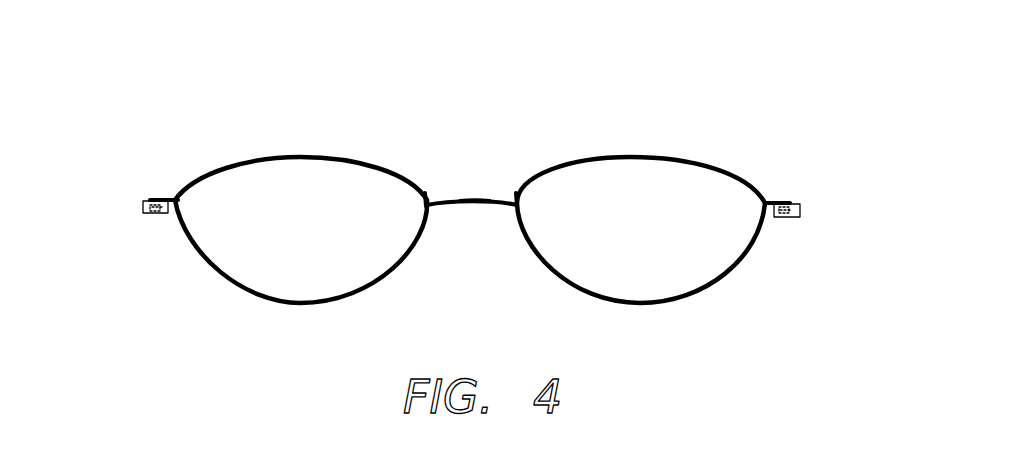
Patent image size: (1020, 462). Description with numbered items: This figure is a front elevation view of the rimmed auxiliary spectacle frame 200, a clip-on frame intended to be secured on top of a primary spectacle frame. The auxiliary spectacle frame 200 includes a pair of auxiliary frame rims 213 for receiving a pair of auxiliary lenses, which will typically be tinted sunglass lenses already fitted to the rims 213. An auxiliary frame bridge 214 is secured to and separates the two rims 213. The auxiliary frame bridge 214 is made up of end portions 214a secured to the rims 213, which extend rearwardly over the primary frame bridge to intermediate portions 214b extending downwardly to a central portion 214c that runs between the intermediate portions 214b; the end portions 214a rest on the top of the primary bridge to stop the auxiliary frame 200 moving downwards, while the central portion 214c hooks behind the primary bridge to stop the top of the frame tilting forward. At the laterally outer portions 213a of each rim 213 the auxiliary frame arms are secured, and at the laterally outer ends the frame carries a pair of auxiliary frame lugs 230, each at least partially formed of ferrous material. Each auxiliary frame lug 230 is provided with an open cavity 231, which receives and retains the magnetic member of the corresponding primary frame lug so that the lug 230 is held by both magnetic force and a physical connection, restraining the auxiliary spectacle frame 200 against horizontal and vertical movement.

The auxiliary spectacle frame 200 is at (635, 113).
The auxiliary frame rim 213 is at (303, 157).
The laterally outer portion of auxiliary frame rim 213a is at (173, 197).
The auxiliary frame bridge 214 is at (456, 219).
The end portion 214a is at (425, 194).
The intermediate portion 214b is at (515, 194).
The central portion 214c is at (483, 207).
The auxiliary frame lug 230 is at (143, 210).
The open cavity 231 is at (157, 217).